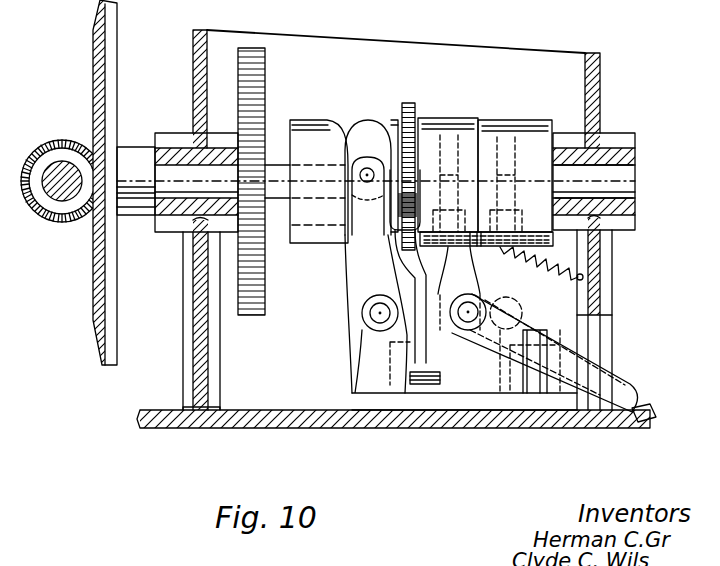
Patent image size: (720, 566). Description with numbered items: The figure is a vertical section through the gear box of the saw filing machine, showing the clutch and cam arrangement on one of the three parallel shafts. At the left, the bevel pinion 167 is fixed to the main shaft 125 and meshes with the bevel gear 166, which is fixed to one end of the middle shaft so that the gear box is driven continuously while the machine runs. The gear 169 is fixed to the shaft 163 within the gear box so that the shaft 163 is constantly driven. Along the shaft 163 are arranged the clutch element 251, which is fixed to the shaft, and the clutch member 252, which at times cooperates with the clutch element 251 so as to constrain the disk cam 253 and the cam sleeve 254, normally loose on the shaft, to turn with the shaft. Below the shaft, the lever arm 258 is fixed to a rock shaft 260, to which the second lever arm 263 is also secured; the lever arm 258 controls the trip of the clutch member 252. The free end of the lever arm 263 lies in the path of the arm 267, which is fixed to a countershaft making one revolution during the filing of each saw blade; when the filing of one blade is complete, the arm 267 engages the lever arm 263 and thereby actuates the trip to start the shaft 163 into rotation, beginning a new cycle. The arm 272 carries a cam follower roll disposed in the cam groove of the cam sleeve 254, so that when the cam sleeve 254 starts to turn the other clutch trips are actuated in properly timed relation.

The main shaft 125 is at (60, 195).
The shaft 163 is at (623, 177).
The bevel gear 166 is at (112, 60).
The bevel pinion 167 is at (53, 140).
The gear 169 is at (260, 78).
The clutch element 251 is at (525, 127).
The clutch member 252 is at (438, 122).
The disk cam 253 is at (418, 82).
The cam sleeve 254 is at (305, 127).
The lever arm 258 is at (445, 250).
The rock shaft 260 is at (470, 318).
The second lever arm 263 is at (568, 365).
The arm 267 is at (657, 413).
The second arm 272 is at (358, 261).